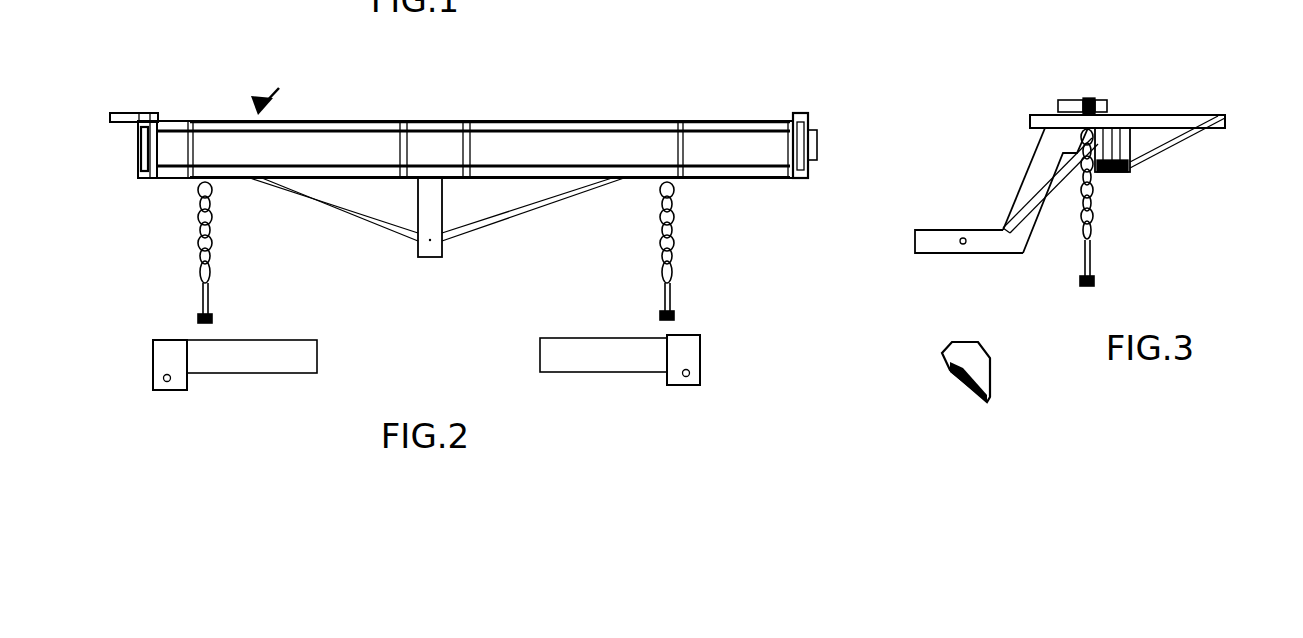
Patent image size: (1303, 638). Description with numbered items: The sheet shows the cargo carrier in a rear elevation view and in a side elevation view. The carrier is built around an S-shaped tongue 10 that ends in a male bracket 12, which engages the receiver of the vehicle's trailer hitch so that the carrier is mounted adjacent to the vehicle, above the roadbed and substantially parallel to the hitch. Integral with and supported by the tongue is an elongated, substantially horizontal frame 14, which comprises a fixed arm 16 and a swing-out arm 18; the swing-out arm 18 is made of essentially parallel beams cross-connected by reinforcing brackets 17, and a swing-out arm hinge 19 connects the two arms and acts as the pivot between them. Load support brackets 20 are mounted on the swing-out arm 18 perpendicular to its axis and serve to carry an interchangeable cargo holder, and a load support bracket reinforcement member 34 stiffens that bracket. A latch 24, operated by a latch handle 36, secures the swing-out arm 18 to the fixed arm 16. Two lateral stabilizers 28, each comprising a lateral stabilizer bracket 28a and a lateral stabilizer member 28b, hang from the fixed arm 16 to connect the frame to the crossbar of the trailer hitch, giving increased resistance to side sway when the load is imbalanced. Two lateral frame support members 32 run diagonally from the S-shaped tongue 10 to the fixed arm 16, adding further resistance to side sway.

In FIG. 2, the S-shaped tongue 10 is at (428, 260).
In FIG. 3, the S-shaped tongue 10 is at (1033, 177).
In FIG. 3, the male bracket 12 is at (915, 243).
In FIG. 2, the frame 14 is at (268, 88).
In FIG. 2, the fixed arm 16 is at (271, 150).
In FIG. 2, the reinforcing brackets 17 is at (473, 152).
In FIG. 2, the swing-out arm 18 is at (563, 168).
In FIG. 2, the swing-out arm hinge 19 is at (819, 140).
In FIG. 3, the load support bracket 20 is at (1162, 112).
In FIG. 2, the latch 24 is at (140, 140).
In FIG. 3, the latch 24 is at (1095, 98).
In FIG. 2, the lateral stabilizers 28 is at (203, 288).
In FIG. 3, the lateral stabilizers 28 is at (1082, 252).
In FIG. 2, the lateral stabilizer bracket 28a is at (253, 373).
In FIG. 2, the lateral stabilizer member 28b is at (198, 243).
In FIG. 3, the lateral stabilizer member 28b is at (1100, 211).
In FIG. 2, the frame support member 32 is at (360, 210).
In FIG. 3, the frame support member 32 is at (1047, 190).
In FIG. 2, the load support bracket reinforcement member 34 is at (193, 135).
In FIG. 3, the load support bracket reinforcement member 34 is at (1183, 140).
In FIG. 2, the latch handle 36 is at (121, 113).